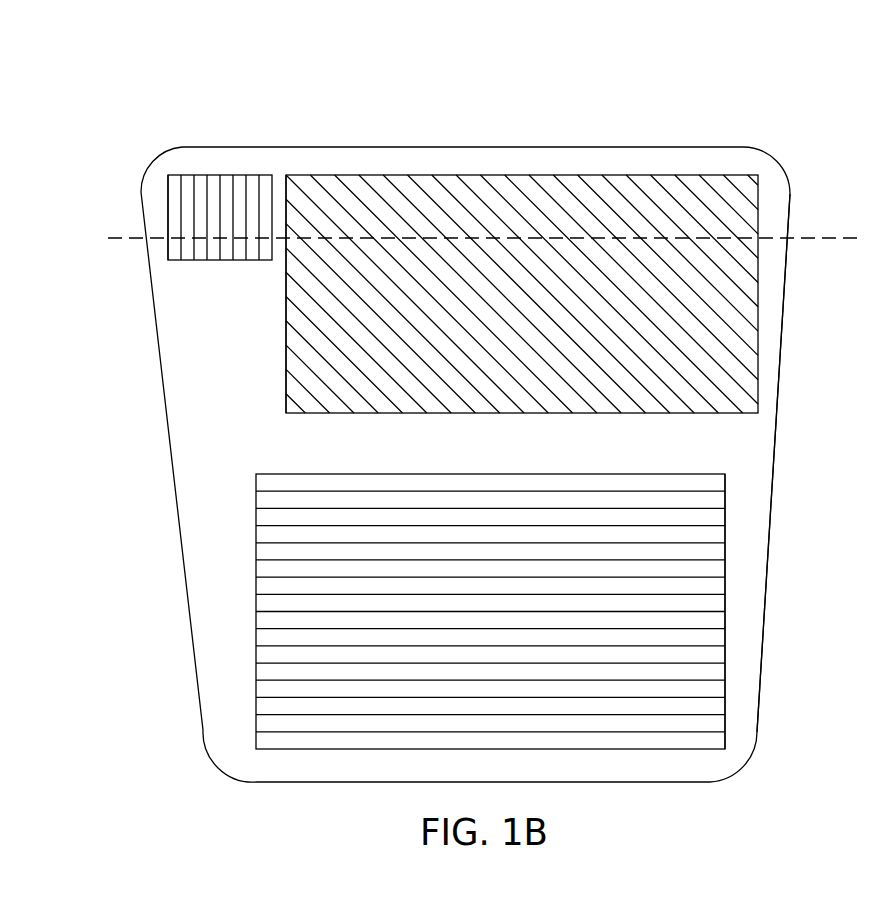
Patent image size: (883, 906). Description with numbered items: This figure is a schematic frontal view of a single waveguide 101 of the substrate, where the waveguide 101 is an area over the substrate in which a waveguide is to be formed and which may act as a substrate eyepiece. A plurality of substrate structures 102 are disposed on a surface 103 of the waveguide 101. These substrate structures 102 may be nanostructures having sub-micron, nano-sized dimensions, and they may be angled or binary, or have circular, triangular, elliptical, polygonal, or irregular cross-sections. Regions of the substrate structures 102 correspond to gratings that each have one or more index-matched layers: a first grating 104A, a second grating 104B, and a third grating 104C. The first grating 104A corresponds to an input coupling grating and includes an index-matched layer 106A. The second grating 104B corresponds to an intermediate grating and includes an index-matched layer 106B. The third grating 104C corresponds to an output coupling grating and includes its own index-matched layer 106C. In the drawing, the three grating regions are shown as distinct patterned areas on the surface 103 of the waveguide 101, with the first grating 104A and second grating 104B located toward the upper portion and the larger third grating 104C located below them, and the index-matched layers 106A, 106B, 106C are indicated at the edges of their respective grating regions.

The waveguide 101 is at (205, 86).
The substrate structures 102 is at (516, 468).
The surface 103 is at (755, 533).
The first grating 104A is at (252, 262).
The second grating 104B is at (318, 413).
The third grating 104C is at (322, 750).
The index-matched layer 106A is at (172, 262).
The index-matched layer 106B is at (286, 383).
The index-matched layer 106C is at (727, 657).